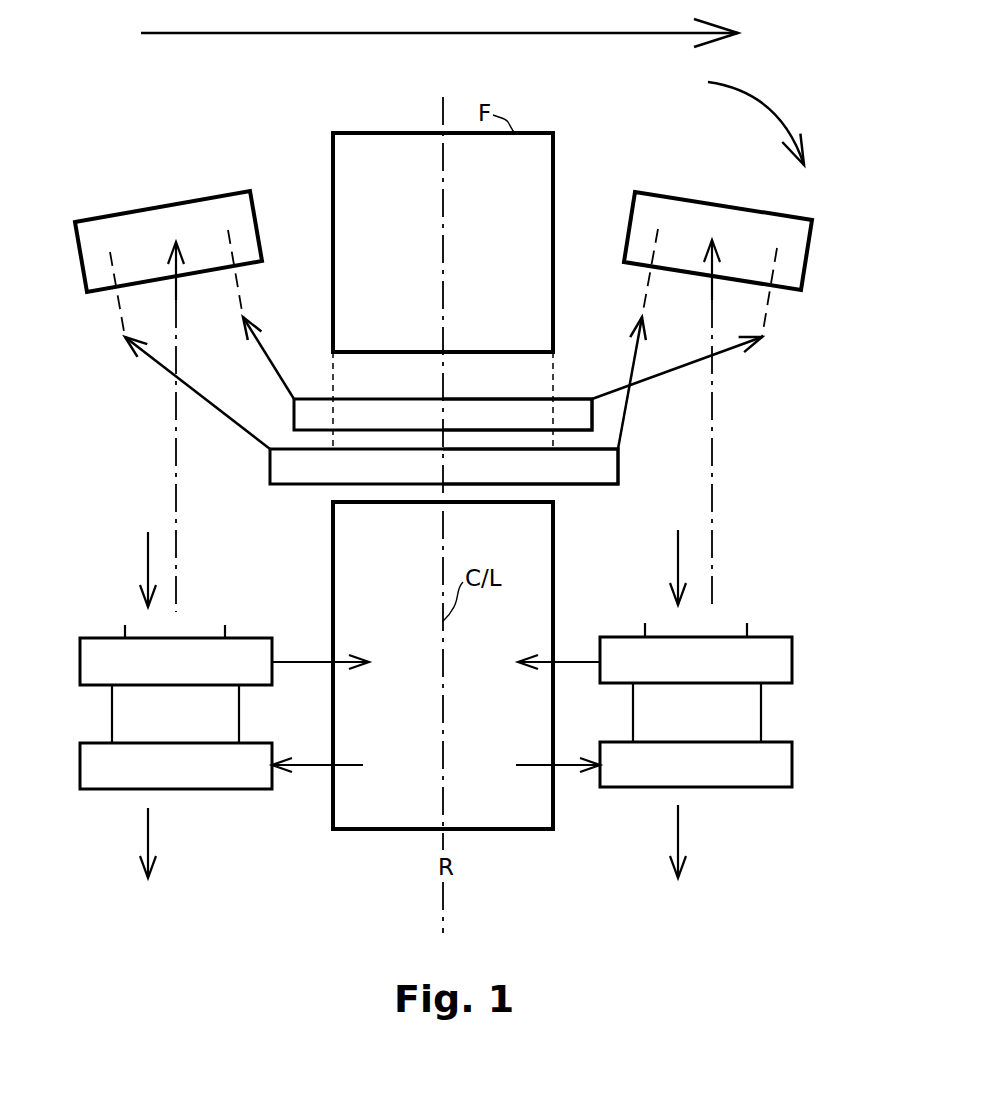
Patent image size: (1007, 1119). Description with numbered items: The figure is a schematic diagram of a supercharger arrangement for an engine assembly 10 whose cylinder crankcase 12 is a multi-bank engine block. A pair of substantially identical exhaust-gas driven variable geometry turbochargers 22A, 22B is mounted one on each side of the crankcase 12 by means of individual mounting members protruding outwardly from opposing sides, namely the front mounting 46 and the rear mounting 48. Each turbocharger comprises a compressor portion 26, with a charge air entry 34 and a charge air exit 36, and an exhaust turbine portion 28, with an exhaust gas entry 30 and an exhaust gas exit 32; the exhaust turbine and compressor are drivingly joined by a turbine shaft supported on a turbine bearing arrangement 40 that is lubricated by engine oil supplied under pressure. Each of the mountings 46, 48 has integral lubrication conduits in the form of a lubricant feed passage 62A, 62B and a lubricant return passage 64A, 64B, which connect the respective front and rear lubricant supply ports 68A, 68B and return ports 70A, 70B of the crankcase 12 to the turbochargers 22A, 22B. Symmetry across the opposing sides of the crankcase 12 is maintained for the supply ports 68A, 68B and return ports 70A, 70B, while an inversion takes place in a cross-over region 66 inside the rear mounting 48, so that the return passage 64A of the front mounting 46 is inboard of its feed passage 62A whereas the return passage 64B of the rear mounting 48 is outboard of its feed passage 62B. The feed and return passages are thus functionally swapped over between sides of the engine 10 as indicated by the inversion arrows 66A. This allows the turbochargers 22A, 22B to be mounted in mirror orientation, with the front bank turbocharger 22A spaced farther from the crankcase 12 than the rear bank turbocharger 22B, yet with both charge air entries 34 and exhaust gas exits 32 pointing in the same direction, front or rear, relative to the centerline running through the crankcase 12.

The engine assembly 10 is at (302, 812).
The cylinder crankcase 12 is at (553, 180).
The front bank turbocharger 22A is at (452, 723).
The rear bank turbocharger 22B is at (805, 630).
The compressor portion 26 is at (80, 658).
The exhaust turbine portion 28 is at (99, 790).
The exhaust gas entry 30 is at (352, 765).
The exhaust gas exit 32 is at (148, 846).
The charge air entry 34 is at (148, 568).
The charge air exit 36 is at (306, 660).
The turbine bearing arrangement 40 is at (112, 710).
The front mounting 46 is at (156, 207).
The rear mounting 48 is at (742, 208).
The lubricant feed passage 62A is at (214, 412).
The lubricant feed passage 62B is at (626, 414).
The lubricant return passage 64A is at (275, 376).
The lubricant return passage 64B is at (732, 354).
The cross-over region 66 is at (620, 374).
The inversion arrows 66A is at (232, 33).
The front lubricant supply port 68A is at (444, 466).
The rear lubricant supply port 68B is at (530, 466).
The front lubricant return port 70A is at (443, 414).
The rear lubricant return port 70B is at (517, 414).